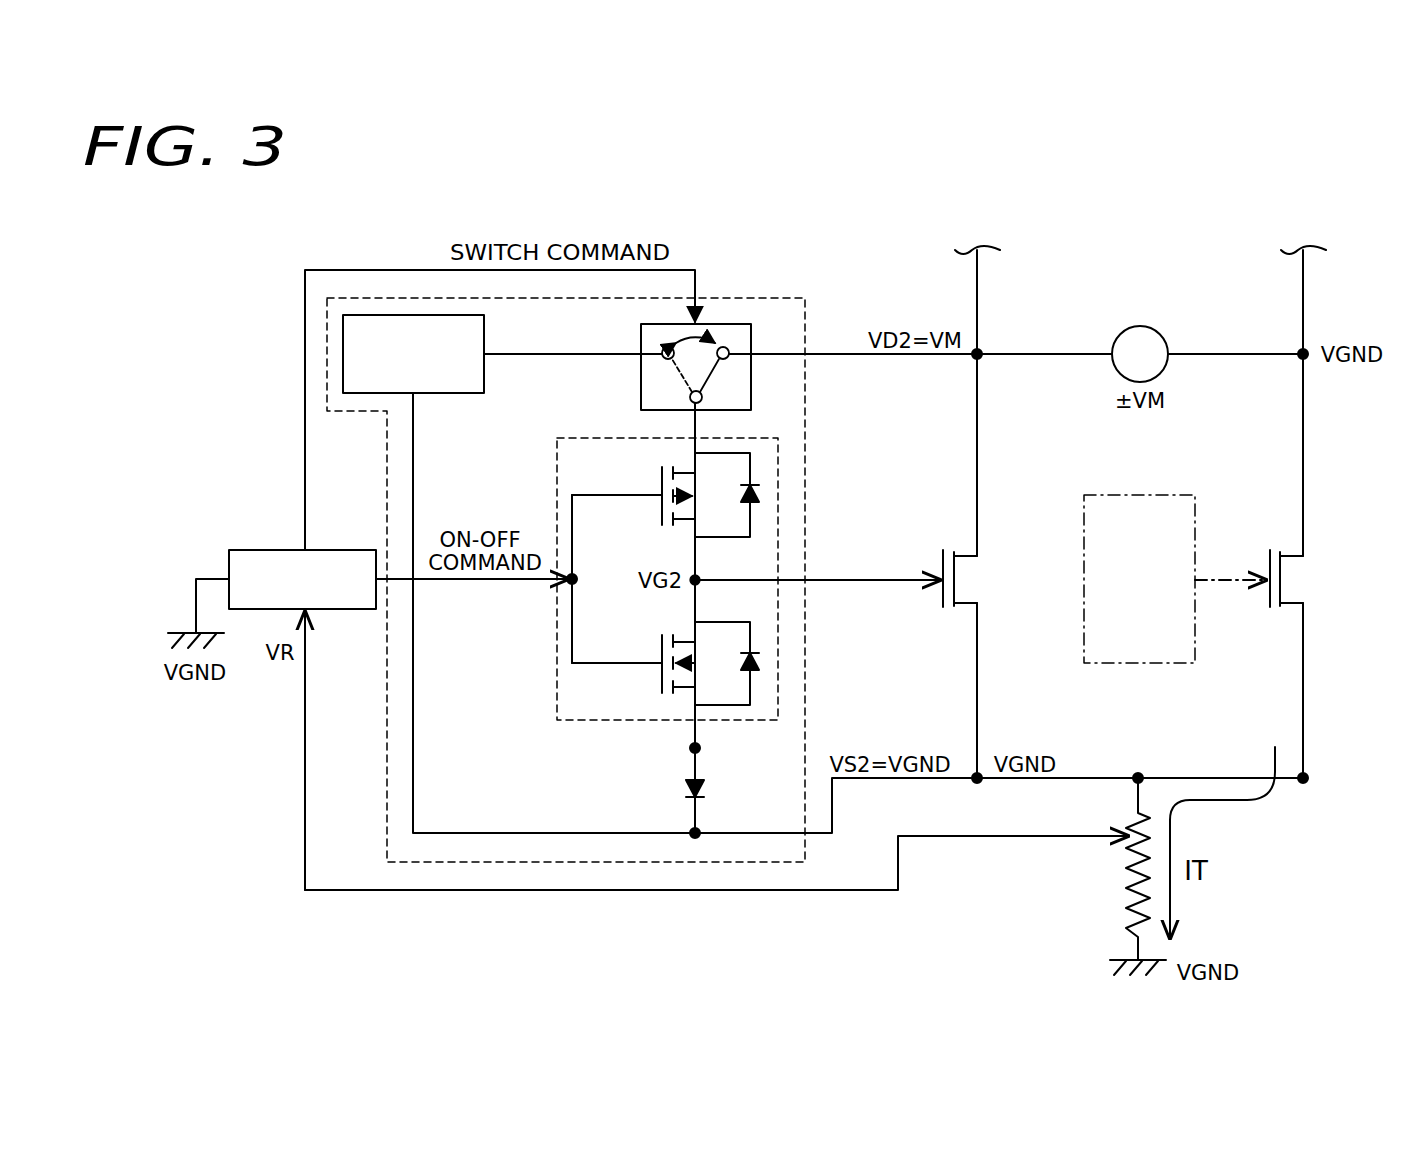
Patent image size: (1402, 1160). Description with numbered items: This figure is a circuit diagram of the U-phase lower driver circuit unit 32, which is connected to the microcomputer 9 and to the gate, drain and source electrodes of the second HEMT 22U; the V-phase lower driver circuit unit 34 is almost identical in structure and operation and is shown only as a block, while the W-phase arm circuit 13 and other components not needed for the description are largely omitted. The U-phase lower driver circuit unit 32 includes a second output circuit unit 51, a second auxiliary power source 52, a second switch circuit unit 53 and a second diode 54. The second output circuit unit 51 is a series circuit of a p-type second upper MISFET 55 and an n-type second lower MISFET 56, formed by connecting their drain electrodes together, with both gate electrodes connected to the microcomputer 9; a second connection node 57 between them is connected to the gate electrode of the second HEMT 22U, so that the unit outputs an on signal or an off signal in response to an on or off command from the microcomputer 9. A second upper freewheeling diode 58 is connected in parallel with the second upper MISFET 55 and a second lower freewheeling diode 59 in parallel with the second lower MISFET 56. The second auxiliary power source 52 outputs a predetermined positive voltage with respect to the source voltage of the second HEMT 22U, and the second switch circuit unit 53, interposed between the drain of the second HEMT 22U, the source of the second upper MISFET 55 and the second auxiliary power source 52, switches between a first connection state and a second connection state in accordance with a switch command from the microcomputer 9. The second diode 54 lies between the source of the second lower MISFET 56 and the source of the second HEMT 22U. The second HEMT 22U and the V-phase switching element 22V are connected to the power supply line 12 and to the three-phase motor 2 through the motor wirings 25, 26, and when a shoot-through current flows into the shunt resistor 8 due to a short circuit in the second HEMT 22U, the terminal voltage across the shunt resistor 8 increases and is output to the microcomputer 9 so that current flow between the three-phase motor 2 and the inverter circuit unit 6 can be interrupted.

The three-phase motor 2 is at (1140, 326).
The inverter circuit unit 6 is at (1299, 798).
The shunt resistor 8 is at (1127, 903).
The microcomputer 9 is at (277, 550).
The power supply line 12 is at (978, 278).
The W-phase arm circuit 13 is at (1303, 300).
The second HEMT 22U is at (940, 565).
The V-phase switching element 22V is at (1268, 565).
The motor wiring 25 is at (1057, 355).
The motor wiring 26 is at (1228, 355).
The U-phase lower driver circuit unit 32 is at (750, 298).
The V-phase lower driver circuit unit 34 is at (1143, 495).
The second output circuit unit 51 is at (612, 720).
The second auxiliary power source 52 is at (467, 393).
The second switch circuit unit 53 is at (641, 388).
The second diode 54 is at (705, 790).
The second upper MISFET 55 is at (655, 483).
The second lower MISFET 56 is at (655, 650).
The second connection node 57 is at (699, 578).
The second upper freewheeling diode 58 is at (740, 498).
The second lower freewheeling diode 59 is at (740, 667).